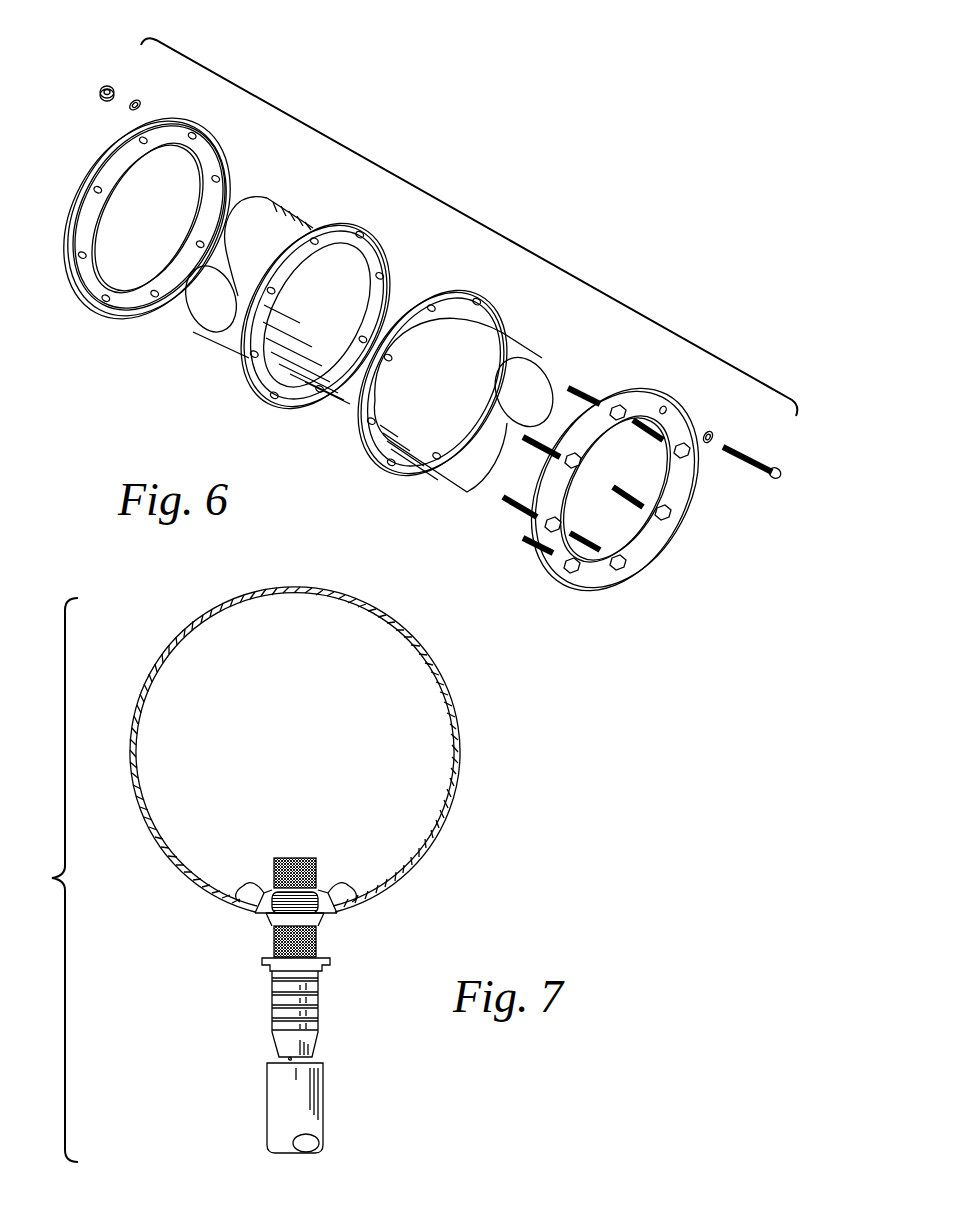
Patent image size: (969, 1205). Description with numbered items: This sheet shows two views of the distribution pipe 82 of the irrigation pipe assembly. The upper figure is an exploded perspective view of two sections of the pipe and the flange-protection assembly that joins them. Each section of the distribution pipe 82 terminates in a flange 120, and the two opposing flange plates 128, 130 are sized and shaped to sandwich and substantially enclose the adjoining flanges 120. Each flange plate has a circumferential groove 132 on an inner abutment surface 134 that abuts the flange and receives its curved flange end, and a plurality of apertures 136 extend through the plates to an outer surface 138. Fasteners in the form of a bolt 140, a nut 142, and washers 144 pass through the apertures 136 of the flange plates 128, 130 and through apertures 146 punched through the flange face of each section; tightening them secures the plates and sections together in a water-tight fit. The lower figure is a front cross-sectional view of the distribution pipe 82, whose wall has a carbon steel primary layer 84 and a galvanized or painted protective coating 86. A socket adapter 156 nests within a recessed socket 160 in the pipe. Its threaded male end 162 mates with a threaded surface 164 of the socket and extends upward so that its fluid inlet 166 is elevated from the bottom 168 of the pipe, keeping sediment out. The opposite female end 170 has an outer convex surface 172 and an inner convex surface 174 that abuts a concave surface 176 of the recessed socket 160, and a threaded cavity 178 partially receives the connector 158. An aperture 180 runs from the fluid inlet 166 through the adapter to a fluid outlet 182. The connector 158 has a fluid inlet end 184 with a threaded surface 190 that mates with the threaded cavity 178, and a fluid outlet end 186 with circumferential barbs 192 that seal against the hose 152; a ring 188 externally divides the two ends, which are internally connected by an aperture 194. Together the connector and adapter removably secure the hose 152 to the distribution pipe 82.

In FIG. 6, the distribution pipe 82 is at (272, 212).
In FIG. 7, the distribution pipe 82 is at (335, 749).
In FIG. 7, the primary layer 84 is at (446, 718).
In FIG. 7, the protective coating 86 is at (458, 733).
In FIG. 6, the flange 120 is at (310, 294).
In FIG. 6, the flange plate 128 is at (161, 216).
In FIG. 6, the flange plate 130 is at (646, 459).
In FIG. 6, the circumferential groove 132 is at (222, 158).
In FIG. 6, the inner abutment surface 134 is at (92, 226).
In FIG. 6, the apertures 136 is at (134, 302).
In FIG. 6, the flange face 138 is at (598, 578).
In FIG. 6, the bolt 140 is at (775, 480).
In FIG. 6, the nut 142 is at (105, 85).
In FIG. 6, the washers 144 is at (142, 101).
In FIG. 6, the apertures 146 is at (270, 398).
In FIG. 7, the hose 152 is at (325, 1097).
In FIG. 7, the socket adapter 156 is at (346, 920).
In FIG. 7, the connector 158 is at (287, 1028).
In FIG. 7, the recessed socket 160 is at (290, 919).
In FIG. 7, the threaded male end 162 is at (320, 858).
In FIG. 7, the threaded surface 164 is at (325, 878).
In FIG. 7, the fluid inlet 166 is at (278, 856).
In FIG. 7, the bottom 168 is at (228, 903).
In FIG. 7, the female end 170 is at (258, 912).
In FIG. 7, the outer convex surface 172 is at (254, 931).
In FIG. 7, the inner convex surface 174 is at (248, 893).
In FIG. 7, the concave surface 176 is at (258, 880).
In FIG. 7, the threaded cavity 178 is at (320, 916).
In FIG. 7, the aperture 180 is at (296, 855).
In FIG. 7, the fluid outlet 182 is at (268, 932).
In FIG. 7, the fluid inlet end 184 is at (333, 935).
In FIG. 7, the fluid outlet end 186 is at (300, 1057).
In FIG. 7, the ring 188 is at (270, 984).
In FIG. 7, the threaded surface 190 is at (270, 957).
In FIG. 7, the circumferential barbs 192 is at (272, 1022).
In FIG. 7, the aperture 194 is at (286, 1058).